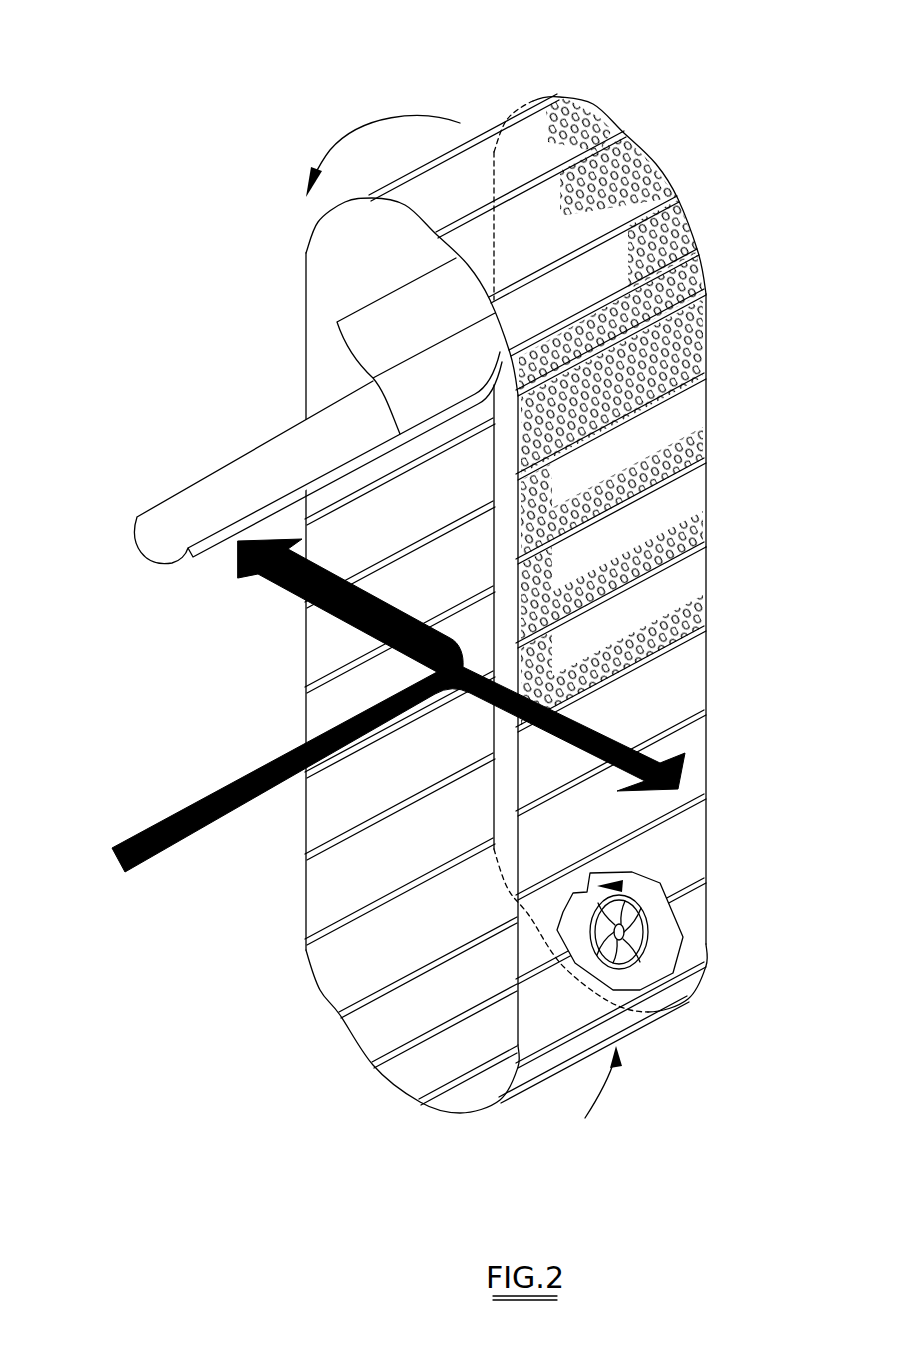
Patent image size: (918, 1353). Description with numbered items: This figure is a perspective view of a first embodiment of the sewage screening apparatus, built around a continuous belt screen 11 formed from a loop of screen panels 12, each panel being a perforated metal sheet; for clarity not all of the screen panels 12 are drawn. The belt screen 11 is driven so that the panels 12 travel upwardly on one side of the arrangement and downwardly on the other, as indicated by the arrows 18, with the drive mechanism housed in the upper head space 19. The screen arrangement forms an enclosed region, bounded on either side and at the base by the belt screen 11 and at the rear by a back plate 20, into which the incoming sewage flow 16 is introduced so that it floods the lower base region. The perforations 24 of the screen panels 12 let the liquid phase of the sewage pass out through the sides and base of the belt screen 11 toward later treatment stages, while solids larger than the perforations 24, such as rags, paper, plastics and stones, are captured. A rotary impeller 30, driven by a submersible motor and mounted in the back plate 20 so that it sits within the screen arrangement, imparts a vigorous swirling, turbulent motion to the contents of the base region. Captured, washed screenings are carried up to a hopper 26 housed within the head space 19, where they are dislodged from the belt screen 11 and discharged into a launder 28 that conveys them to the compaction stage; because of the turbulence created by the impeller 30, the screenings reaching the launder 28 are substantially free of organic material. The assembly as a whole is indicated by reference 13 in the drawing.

The belt screen 11 is at (705, 320).
The screen panels 12 is at (667, 519).
The rotary drum assembly 13 is at (672, 101).
The sewage flow 16 is at (188, 845).
The arrows 18 is at (410, 113).
The upper head space 19 is at (298, 304).
The back plate 20 is at (650, 610).
The perforations 24 is at (522, 590).
The hopper 26 is at (392, 314).
The launder 28 is at (277, 427).
The rotary impeller 30 is at (652, 973).